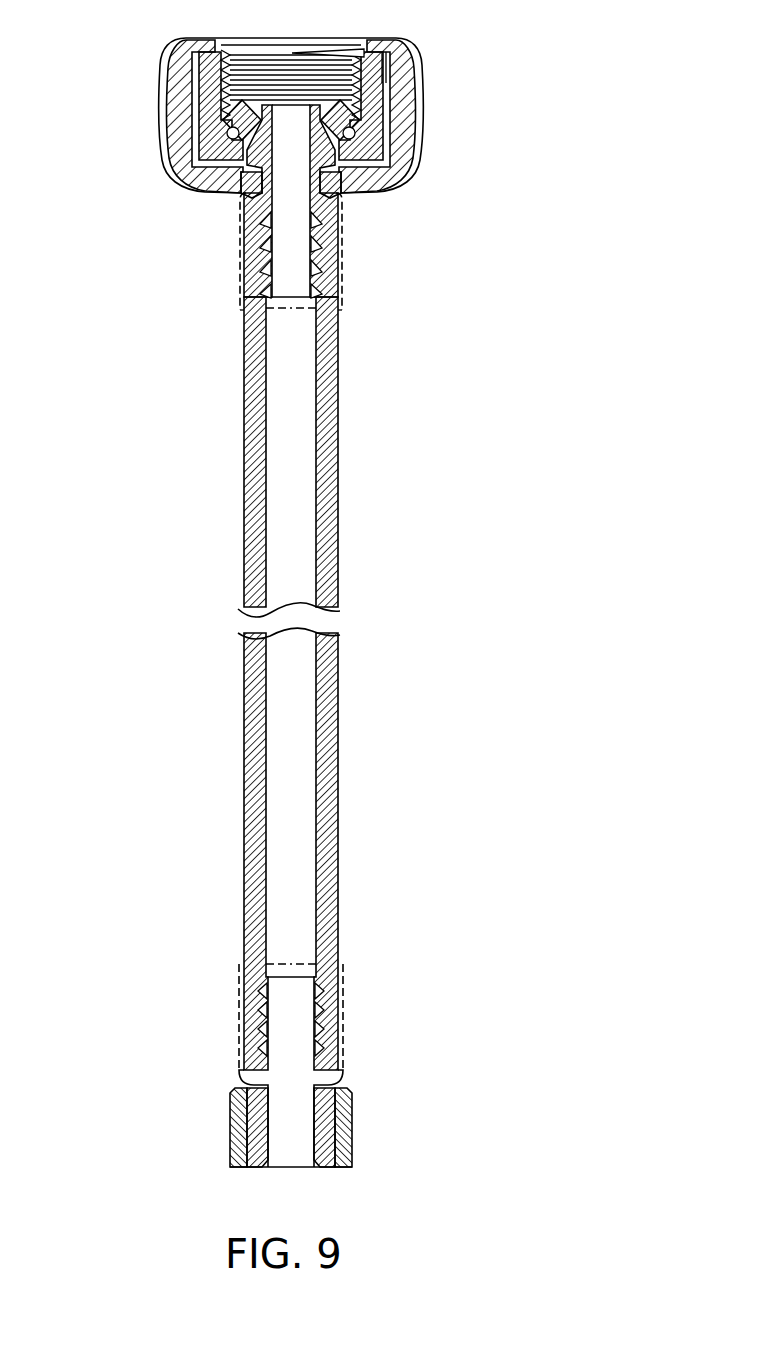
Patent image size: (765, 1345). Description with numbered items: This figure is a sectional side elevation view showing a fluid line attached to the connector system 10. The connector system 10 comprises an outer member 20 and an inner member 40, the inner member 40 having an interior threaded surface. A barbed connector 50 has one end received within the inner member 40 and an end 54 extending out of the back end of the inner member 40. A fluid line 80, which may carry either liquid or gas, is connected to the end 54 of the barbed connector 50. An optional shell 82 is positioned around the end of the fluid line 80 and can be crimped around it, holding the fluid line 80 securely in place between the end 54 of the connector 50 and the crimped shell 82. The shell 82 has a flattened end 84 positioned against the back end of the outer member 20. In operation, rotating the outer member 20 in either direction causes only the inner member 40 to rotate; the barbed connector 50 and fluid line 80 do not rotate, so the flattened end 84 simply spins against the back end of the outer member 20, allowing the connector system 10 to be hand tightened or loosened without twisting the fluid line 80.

The connector system 10 is at (462, 100).
The outer member 20 is at (163, 105).
The inner member 40 is at (217, 73).
The barbed connector 50 is at (314, 276).
The end of connector 54 is at (242, 270).
The fluid line 80 is at (245, 355).
The shell 82 is at (242, 208).
The flattened end 84 is at (333, 175).